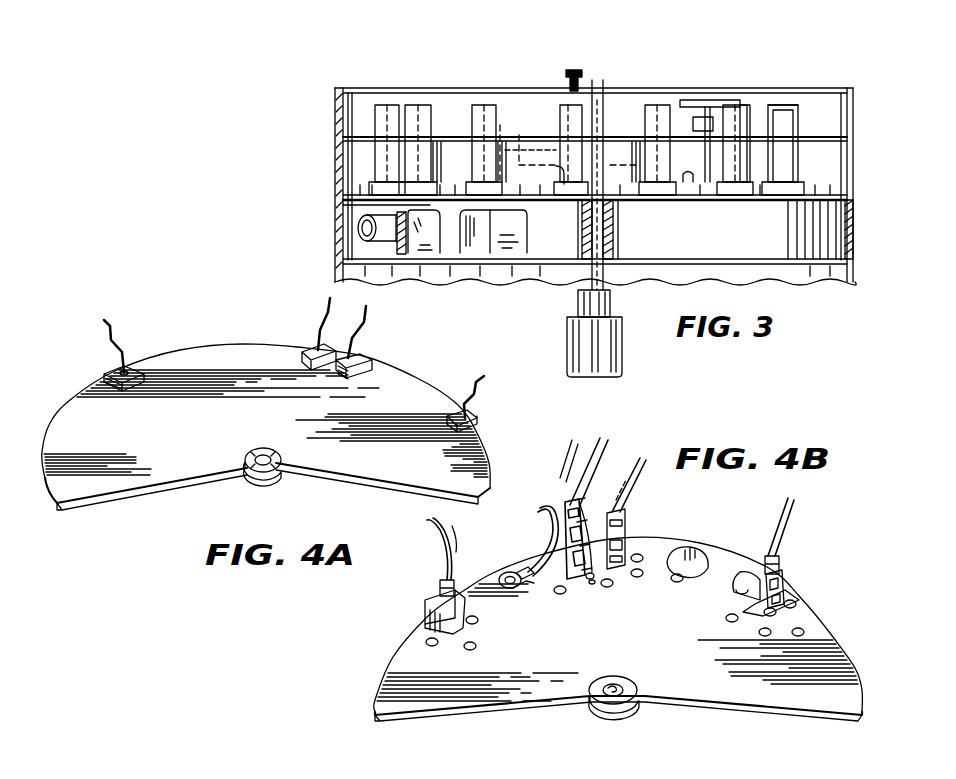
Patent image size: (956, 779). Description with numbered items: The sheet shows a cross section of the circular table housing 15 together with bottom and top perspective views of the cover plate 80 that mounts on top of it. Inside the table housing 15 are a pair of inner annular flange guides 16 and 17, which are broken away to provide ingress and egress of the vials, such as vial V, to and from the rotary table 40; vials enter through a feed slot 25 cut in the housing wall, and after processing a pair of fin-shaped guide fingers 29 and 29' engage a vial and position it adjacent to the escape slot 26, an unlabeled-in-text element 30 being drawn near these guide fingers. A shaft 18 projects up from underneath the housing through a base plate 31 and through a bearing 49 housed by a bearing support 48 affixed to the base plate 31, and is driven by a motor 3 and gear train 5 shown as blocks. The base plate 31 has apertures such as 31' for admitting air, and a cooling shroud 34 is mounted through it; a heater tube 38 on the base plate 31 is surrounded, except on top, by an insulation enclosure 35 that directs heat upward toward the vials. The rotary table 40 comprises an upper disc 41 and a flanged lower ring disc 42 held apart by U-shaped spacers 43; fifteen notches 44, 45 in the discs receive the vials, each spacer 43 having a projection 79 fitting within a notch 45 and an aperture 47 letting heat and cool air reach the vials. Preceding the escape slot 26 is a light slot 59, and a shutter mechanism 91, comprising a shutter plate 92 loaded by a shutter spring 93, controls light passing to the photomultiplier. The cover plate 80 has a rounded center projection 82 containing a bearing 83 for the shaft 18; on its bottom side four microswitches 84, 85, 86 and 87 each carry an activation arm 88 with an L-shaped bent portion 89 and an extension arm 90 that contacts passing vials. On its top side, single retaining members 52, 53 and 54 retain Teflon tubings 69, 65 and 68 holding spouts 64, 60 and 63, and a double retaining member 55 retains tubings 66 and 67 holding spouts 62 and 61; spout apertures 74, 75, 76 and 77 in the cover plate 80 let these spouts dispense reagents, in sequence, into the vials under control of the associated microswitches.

In FIG. 3, the motor 3 is at (618, 358).
In FIG. 3, the gear train 5 is at (622, 312).
In FIG. 3, the table housing 15 is at (340, 128).
In FIG. 3, the inner annular flange guide 16 is at (368, 132).
In FIG. 3, the inner annular flange guide 17 is at (357, 194).
In FIG. 3, the shaft 18 is at (603, 95).
In FIG. 3, the feed slot 25 is at (775, 104).
In FIG. 3, the escape slot 26 is at (736, 106).
In FIG. 3, the guide finger 29 is at (706, 84).
In FIG. 3, the guide finger 29' is at (701, 199).
In FIG. 3, the block 30 is at (700, 128).
In FIG. 3, the base plate 31 is at (595, 281).
In FIG. 3, the aperture 31' is at (595, 223).
In FIG. 3, the cooling shroud 34 is at (512, 240).
In FIG. 3, the insulation enclosure 35 is at (440, 235).
In FIG. 3, the heater tube 38 is at (396, 259).
In FIG. 3, the rotary table 40 is at (676, 96).
In FIG. 3, the upper disc 41 is at (606, 137).
In FIG. 3, the lower ring disc 42 is at (618, 200).
In FIG. 3, the U-shaped spacer 43 is at (435, 126).
In FIG. 3, the notch 44 is at (480, 106).
In FIG. 3, the notch 45 is at (556, 166).
In FIG. 3, the aperture 47 is at (427, 198).
In FIG. 3, the bearing support 48 is at (575, 264).
In FIG. 3, the bearing 49 is at (616, 225).
In FIG. 3, the light slot 59 is at (556, 173).
In FIG. 3, the projection 79 is at (356, 228).
In FIG. 3, the shutter mechanism 91 is at (566, 137).
In FIG. 3, the shutter plate 92 is at (522, 137).
In FIG. 3, the shutter spring 93 is at (578, 80).
In FIG. 3, the vial V is at (384, 106).
In FIG. 4A, the cover plate 80 is at (240, 352).
In FIG. 4B, the cover plate 80 is at (400, 656).
In FIG. 4A, the rounded center projection 82 is at (278, 470).
In FIG. 4B, the rounded center projection 82 is at (640, 700).
In FIG. 4A, the bearing 83 is at (280, 452).
In FIG. 4B, the bearing 83 is at (590, 700).
In FIG. 4A, the microswitch 84 is at (106, 376).
In FIG. 4A, the microswitch 85 is at (475, 422).
In FIG. 4A, the microswitch 86 is at (372, 354).
In FIG. 4A, the microswitch 87 is at (302, 342).
In FIG. 4A, the activation arm 88 is at (126, 360).
In FIG. 4A, the L-shaped bent portion 89 is at (115, 334).
In FIG. 4A, the extension arm 90 is at (109, 318).
In FIG. 4B, the single retaining member 52 is at (772, 556).
In FIG. 4B, the single retaining member 53 is at (428, 588).
In FIG. 4B, the single retaining member 54 is at (628, 510).
In FIG. 4B, the double retaining member 55 is at (560, 545).
In FIG. 4B, the spout 60 is at (425, 582).
In FIG. 4B, the spout 61 is at (578, 518).
In FIG. 4B, the spout 62 is at (586, 582).
In FIG. 4B, the spout 63 is at (596, 583).
In FIG. 4B, the spout 64 is at (786, 562).
In FIG. 4B, the Teflon tubing 65 is at (445, 525).
In FIG. 4B, the Teflon tubing 66 is at (574, 440).
In FIG. 4B, the Teflon tubing 67 is at (555, 475).
In FIG. 4B, the Teflon tubing 68 is at (622, 450).
In FIG. 4B, the Teflon tubing 69 is at (756, 526).
In FIG. 4B, the spout aperture 74 is at (790, 606).
In FIG. 4B, the spout aperture 75 is at (444, 556).
In FIG. 4B, the spout aperture 76 is at (560, 565).
In FIG. 4B, the spout aperture 77 is at (620, 558).